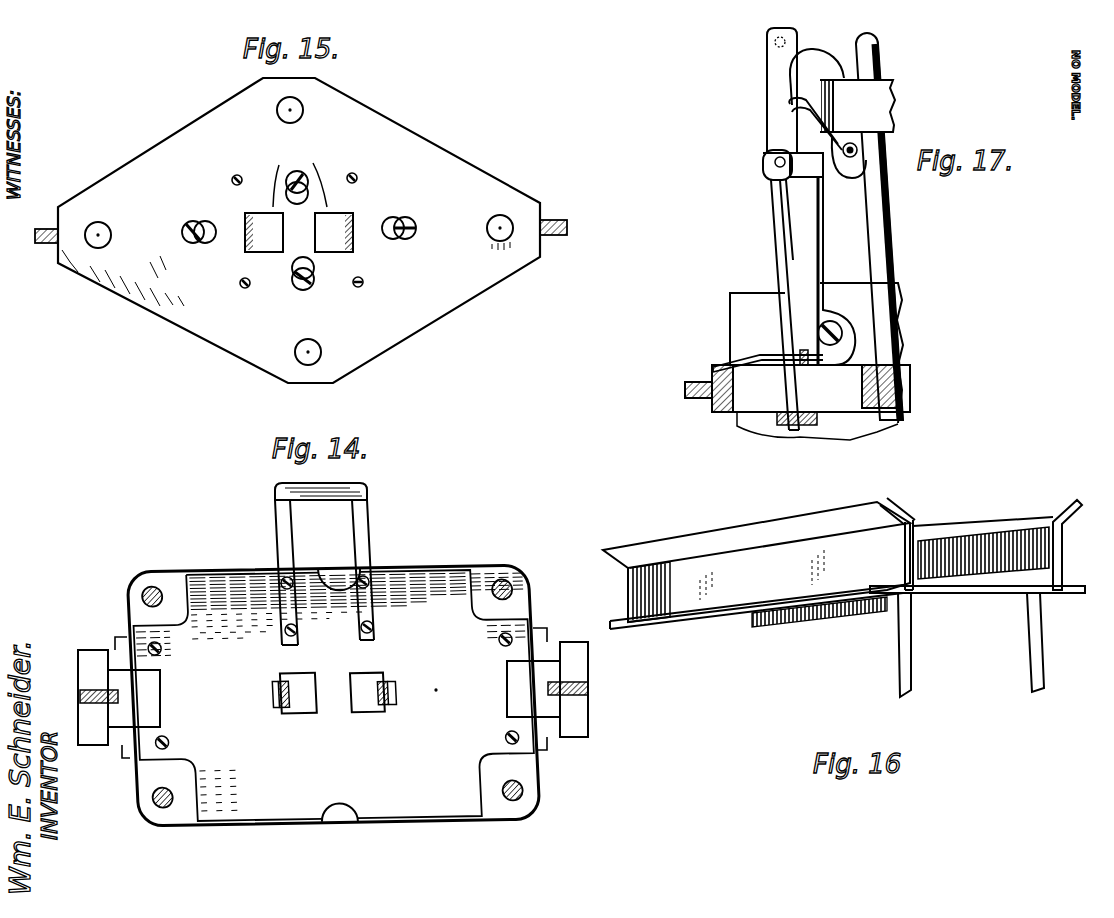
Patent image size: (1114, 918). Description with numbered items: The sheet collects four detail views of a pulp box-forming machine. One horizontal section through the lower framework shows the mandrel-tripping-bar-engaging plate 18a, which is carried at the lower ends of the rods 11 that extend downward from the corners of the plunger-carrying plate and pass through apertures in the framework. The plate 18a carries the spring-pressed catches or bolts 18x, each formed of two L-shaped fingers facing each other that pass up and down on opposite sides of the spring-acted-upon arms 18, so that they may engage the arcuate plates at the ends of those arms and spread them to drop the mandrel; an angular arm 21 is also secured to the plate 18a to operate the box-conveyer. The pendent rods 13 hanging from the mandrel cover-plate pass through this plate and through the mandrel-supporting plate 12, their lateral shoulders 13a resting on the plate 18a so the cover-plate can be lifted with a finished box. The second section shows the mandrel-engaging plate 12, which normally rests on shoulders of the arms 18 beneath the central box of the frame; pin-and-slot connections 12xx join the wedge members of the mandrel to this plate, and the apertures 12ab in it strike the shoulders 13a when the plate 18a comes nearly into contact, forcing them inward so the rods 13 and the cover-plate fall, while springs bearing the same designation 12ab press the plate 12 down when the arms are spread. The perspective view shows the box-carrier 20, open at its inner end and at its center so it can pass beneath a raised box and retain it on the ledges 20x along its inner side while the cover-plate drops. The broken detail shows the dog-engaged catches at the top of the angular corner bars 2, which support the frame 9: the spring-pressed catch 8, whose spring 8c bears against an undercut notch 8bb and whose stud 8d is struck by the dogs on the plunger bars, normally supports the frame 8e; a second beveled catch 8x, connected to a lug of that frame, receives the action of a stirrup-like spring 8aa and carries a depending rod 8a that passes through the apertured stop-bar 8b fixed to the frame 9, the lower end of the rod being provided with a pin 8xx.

In FIG. 17, the angular uprights or bars 2 is at (900, 303).
In FIG. 17, the spring-pressed catches 8 is at (767, 57).
In FIG. 17, the depending rods 8a is at (778, 258).
In FIG. 17, the stirrup-like springs 8aa is at (790, 106).
In FIG. 17, the apertured stop-bars 8b is at (787, 408).
In FIG. 17, the undercut notches 8bb is at (805, 348).
In FIG. 17, the springs 8c is at (760, 357).
In FIG. 17, the studs 8d is at (772, 40).
In FIG. 17, the frame 8e is at (895, 108).
In FIG. 17, the catches 8x is at (812, 62).
In FIG. 17, the lower lug 8xx is at (796, 426).
In FIG. 17, the frame 9 is at (868, 362).
In FIG. 14, the rods 11 is at (508, 588).
In FIG. 17, the rods 11 is at (890, 238).
In FIG. 15, the mandrel-supporting plate 12 is at (299, 230).
In FIG. 15, the apertures in the mandrel-supporting plate 12ab is at (300, 174).
In FIG. 15, the pin-and-slot connections 12xx is at (192, 220).
In FIG. 15, the pendent rods 13 is at (244, 250).
In FIG. 14, the pendent rods 13 is at (372, 715).
In FIG. 14, the lateral offsets or shoulders 13a is at (270, 690).
In FIG. 15, the spring-acted-upon bars or arms 18 is at (50, 246).
In FIG. 14, the spring-acted-upon bars or arms 18 is at (80, 695).
In FIG. 14, the mandrel-tripping-bar-engaging plate 18a is at (452, 690).
In FIG. 14, the spring-pressed catches or bolts 18x is at (86, 655).
In FIG. 16, the box-carrier 20 is at (844, 597).
In FIG. 16, the ledges 20x is at (757, 632).
In FIG. 14, the angular arm 21 is at (328, 500).